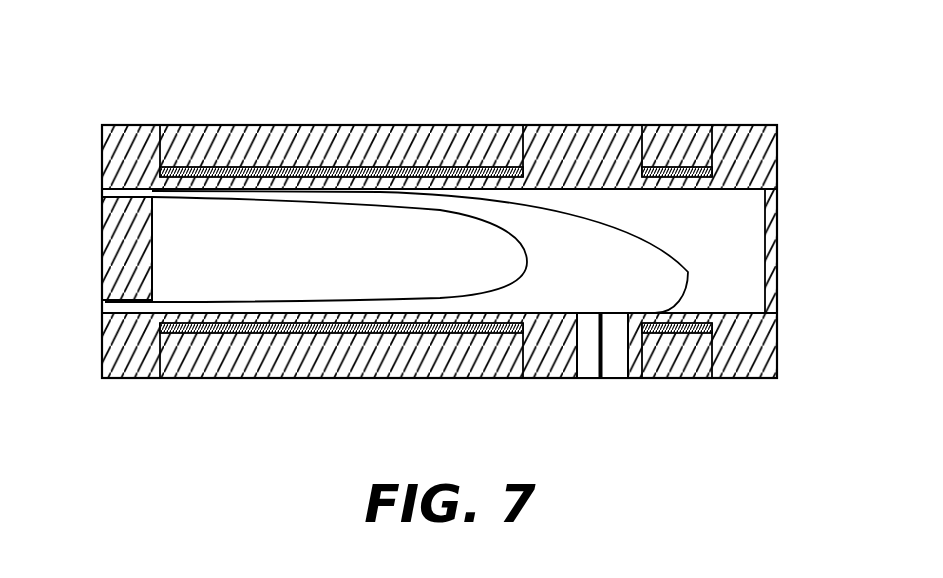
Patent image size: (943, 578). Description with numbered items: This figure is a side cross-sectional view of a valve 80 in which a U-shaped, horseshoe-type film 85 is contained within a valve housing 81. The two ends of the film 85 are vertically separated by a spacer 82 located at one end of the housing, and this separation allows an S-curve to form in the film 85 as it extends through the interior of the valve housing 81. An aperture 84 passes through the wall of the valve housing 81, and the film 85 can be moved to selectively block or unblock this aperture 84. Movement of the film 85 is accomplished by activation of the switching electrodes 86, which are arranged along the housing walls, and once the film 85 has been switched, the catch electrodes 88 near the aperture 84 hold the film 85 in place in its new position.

The valve 80 is at (779, 88).
The valve housing 81 is at (586, 121).
The spacer 82 is at (117, 250).
The aperture 84 is at (599, 392).
The film 85 is at (667, 250).
The switching electrodes 86 is at (522, 125).
The catch electrodes 88 is at (642, 125).